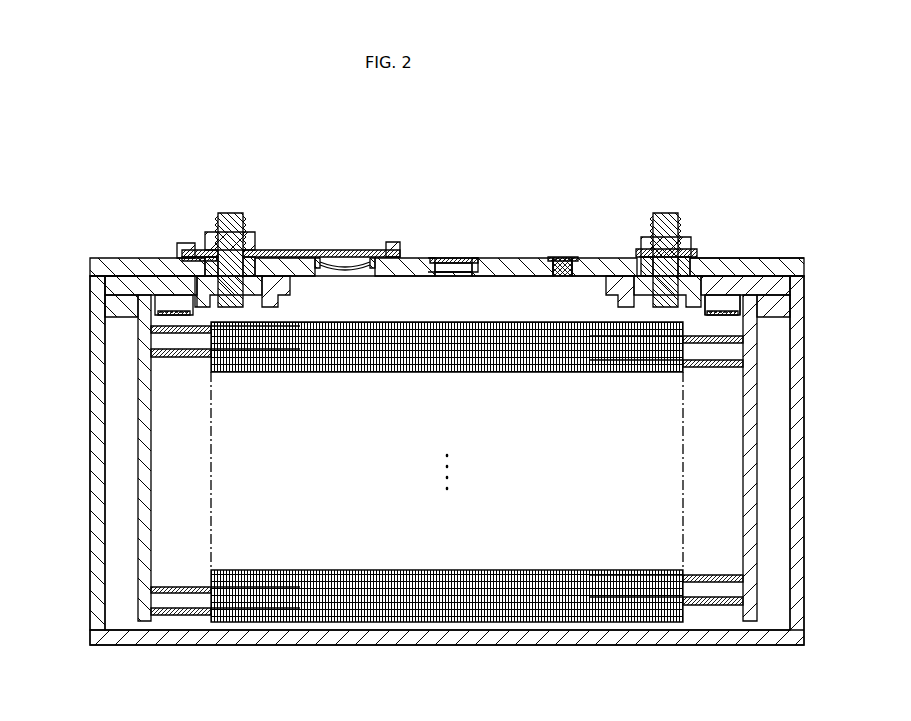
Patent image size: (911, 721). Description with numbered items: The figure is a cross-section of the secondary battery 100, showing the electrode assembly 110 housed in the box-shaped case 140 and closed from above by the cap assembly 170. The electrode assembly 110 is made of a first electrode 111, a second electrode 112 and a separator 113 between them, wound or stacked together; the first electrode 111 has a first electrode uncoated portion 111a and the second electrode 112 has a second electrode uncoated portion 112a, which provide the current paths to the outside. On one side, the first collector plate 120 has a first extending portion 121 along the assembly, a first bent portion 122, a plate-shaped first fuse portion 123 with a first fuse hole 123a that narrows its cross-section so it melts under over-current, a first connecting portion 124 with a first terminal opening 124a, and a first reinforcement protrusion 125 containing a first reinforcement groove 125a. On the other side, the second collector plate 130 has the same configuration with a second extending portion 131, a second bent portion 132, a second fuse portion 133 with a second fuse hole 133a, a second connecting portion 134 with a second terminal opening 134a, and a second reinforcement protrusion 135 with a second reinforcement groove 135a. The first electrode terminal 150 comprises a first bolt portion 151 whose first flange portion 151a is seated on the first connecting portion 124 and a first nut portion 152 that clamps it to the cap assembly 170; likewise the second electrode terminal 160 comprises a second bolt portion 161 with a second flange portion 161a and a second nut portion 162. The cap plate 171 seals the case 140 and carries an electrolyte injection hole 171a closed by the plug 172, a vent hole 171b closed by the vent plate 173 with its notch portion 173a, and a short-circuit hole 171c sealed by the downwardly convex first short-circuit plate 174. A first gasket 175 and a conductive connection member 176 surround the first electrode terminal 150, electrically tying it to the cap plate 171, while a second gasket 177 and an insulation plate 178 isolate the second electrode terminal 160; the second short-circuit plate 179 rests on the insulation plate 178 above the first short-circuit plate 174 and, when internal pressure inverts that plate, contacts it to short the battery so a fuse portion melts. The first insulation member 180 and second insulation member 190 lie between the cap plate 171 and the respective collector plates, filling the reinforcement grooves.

The secondary battery 100 is at (806, 125).
The electrode assembly 110 is at (447, 511).
The first electrode 111 is at (605, 612).
The first electrode uncoated portion 111a is at (703, 600).
The second electrode 112 is at (323, 612).
The second electrode uncoated portion 112a is at (193, 612).
The separator 113 is at (462, 600).
The first collector plate 120 is at (785, 408).
The first extending portion 121 is at (752, 490).
The first bent portion 122 is at (772, 290).
The first fuse portion 123 is at (758, 290).
The first fuse hole 123a is at (735, 305).
The first connecting portion 124 is at (722, 297).
The first terminal opening 124a is at (728, 318).
The first reinforcement protrusion 125 is at (735, 312).
The first reinforcement groove 125a is at (726, 316).
The second collector plate 130 is at (118, 404).
The second extending portion 131 is at (146, 490).
The second bent portion 132 is at (150, 290).
The second fuse portion 133 is at (170, 270).
The second fuse hole 133a is at (160, 306).
The second connecting portion 134 is at (198, 248).
The second terminal opening 134a is at (165, 318).
The second reinforcement protrusion 135 is at (180, 293).
The second reinforcement groove 135a is at (172, 315).
The case 140 is at (806, 393).
The first electrode terminal 150 is at (643, 229).
The first bolt portion 151 is at (675, 228).
The first flange portion 151a is at (616, 298).
The first nut portion 152 is at (650, 240).
The second electrode terminal 160 is at (272, 229).
The second bolt portion 161 is at (222, 230).
The second flange portion 161a is at (282, 298).
The second nut portion 162 is at (250, 233).
The cap assembly 170 is at (585, 255).
The cap plate 171 is at (508, 262).
The electrolyte injection hole 171a is at (556, 278).
The vent hole 171b is at (447, 275).
The short-circuit hole 171c is at (372, 277).
The plug 172 is at (563, 259).
The vent plate 173 is at (468, 262).
The notch portion 173a is at (445, 258).
The first short-circuit plate 174 is at (345, 264).
The first gasket 175 is at (640, 258).
The connection member 176 is at (690, 262).
The second gasket 177 is at (252, 270).
The insulation plate 178 is at (393, 243).
The second short-circuit plate 179 is at (300, 250).
The first insulation member 180 is at (780, 270).
The second insulation member 190 is at (125, 283).